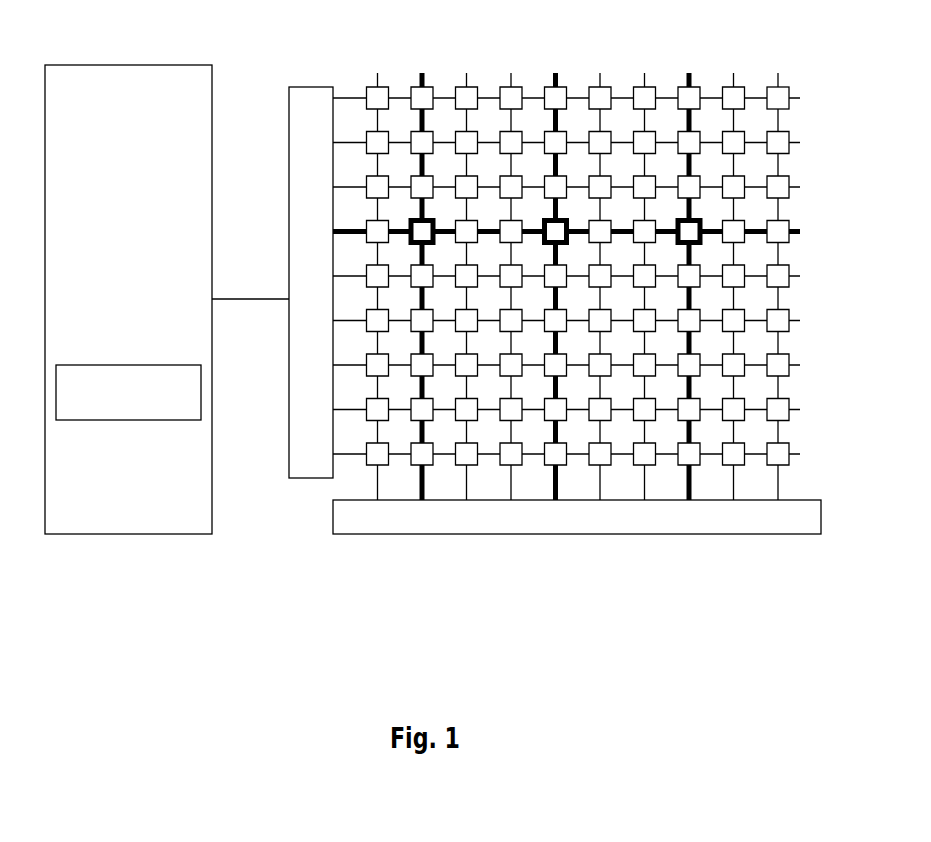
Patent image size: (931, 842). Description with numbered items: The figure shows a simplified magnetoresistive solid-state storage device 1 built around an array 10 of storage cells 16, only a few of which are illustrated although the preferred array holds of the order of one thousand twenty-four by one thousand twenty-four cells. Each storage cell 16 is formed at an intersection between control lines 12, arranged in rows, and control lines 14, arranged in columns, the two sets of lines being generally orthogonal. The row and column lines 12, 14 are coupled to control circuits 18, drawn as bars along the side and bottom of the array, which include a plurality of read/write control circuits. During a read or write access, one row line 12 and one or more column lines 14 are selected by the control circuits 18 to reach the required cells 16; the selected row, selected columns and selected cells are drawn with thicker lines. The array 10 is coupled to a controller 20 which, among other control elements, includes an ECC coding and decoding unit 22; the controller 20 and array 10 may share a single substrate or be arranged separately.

The magnetoresistive solid-state storage device 1 is at (332, 573).
The array 10 is at (601, 267).
The row control lines 12 is at (800, 230).
The column control lines 14 is at (556, 73).
The storage cells 16 is at (777, 97).
The control circuits 18 is at (322, 85).
The controller 20 is at (167, 324).
The ECC coding and decoding unit 22 is at (123, 365).